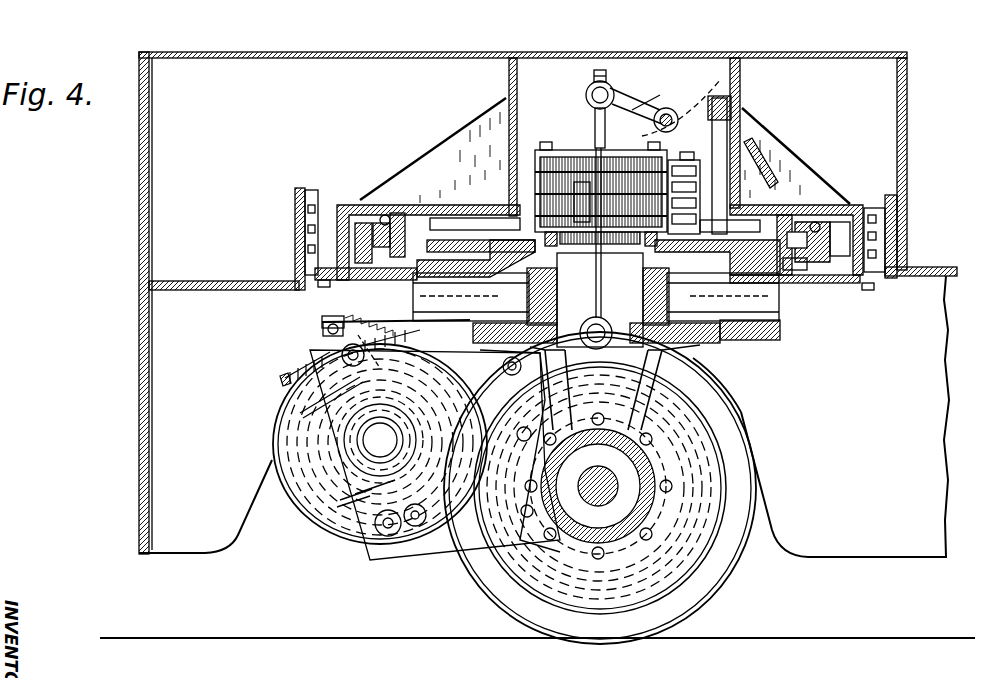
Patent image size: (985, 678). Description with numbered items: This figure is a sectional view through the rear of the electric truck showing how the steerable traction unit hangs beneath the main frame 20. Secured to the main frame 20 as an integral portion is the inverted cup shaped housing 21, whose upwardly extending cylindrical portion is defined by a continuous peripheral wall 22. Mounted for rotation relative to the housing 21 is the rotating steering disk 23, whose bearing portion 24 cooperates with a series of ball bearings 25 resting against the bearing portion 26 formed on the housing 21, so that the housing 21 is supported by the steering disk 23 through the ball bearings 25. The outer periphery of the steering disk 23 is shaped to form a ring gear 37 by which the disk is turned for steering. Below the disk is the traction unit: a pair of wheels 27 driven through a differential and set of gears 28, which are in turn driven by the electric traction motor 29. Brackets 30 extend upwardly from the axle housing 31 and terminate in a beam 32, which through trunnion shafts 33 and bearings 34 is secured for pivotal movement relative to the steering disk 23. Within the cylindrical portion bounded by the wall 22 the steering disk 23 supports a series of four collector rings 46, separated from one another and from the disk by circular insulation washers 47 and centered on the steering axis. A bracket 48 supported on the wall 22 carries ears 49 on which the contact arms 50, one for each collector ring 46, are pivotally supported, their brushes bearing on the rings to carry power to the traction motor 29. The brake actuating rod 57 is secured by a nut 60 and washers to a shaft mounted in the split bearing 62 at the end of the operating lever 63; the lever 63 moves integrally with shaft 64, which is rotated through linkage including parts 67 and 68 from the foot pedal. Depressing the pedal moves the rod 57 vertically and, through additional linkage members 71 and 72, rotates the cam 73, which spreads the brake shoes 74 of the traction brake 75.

The main frame 20 is at (140, 226).
The inverted cup shaped housing 21 is at (358, 192).
The peripheral wall 22 is at (742, 80).
The rotating steering disk 23 is at (780, 286).
The bearing portion 24 is at (300, 234).
The ball bearings 25 is at (386, 214).
The bearing portion 26 is at (398, 212).
The wheels 27 is at (700, 590).
The gearing and differential 28 is at (445, 566).
The electric traction motor 29 is at (318, 542).
The brackets 30 is at (698, 372).
The axle housing 31 is at (645, 505).
The beam 32 is at (710, 342).
The trunnion shafts 33 is at (535, 270).
The bearings 34 is at (425, 320).
The ring gear 37 is at (296, 218).
The collector rings 46 is at (535, 204).
The circular insulation washers 47 is at (574, 184).
The bracket 48 is at (750, 140).
The ears 49 is at (700, 150).
The contact arms 50 is at (600, 300).
The brake actuating rod 57 is at (622, 104).
The nut 60 is at (600, 70).
The split bearing 62 is at (588, 92).
The operating lever 63 is at (648, 110).
The shaft 64 is at (670, 112).
The linkage part 67 is at (728, 104).
The linkage part 68 is at (765, 160).
The linkage member 71 is at (590, 326).
The linkage member 72 is at (396, 314).
The cam 73 is at (330, 333).
The brake shoes 74 is at (300, 392).
The traction brake 75 is at (335, 502).